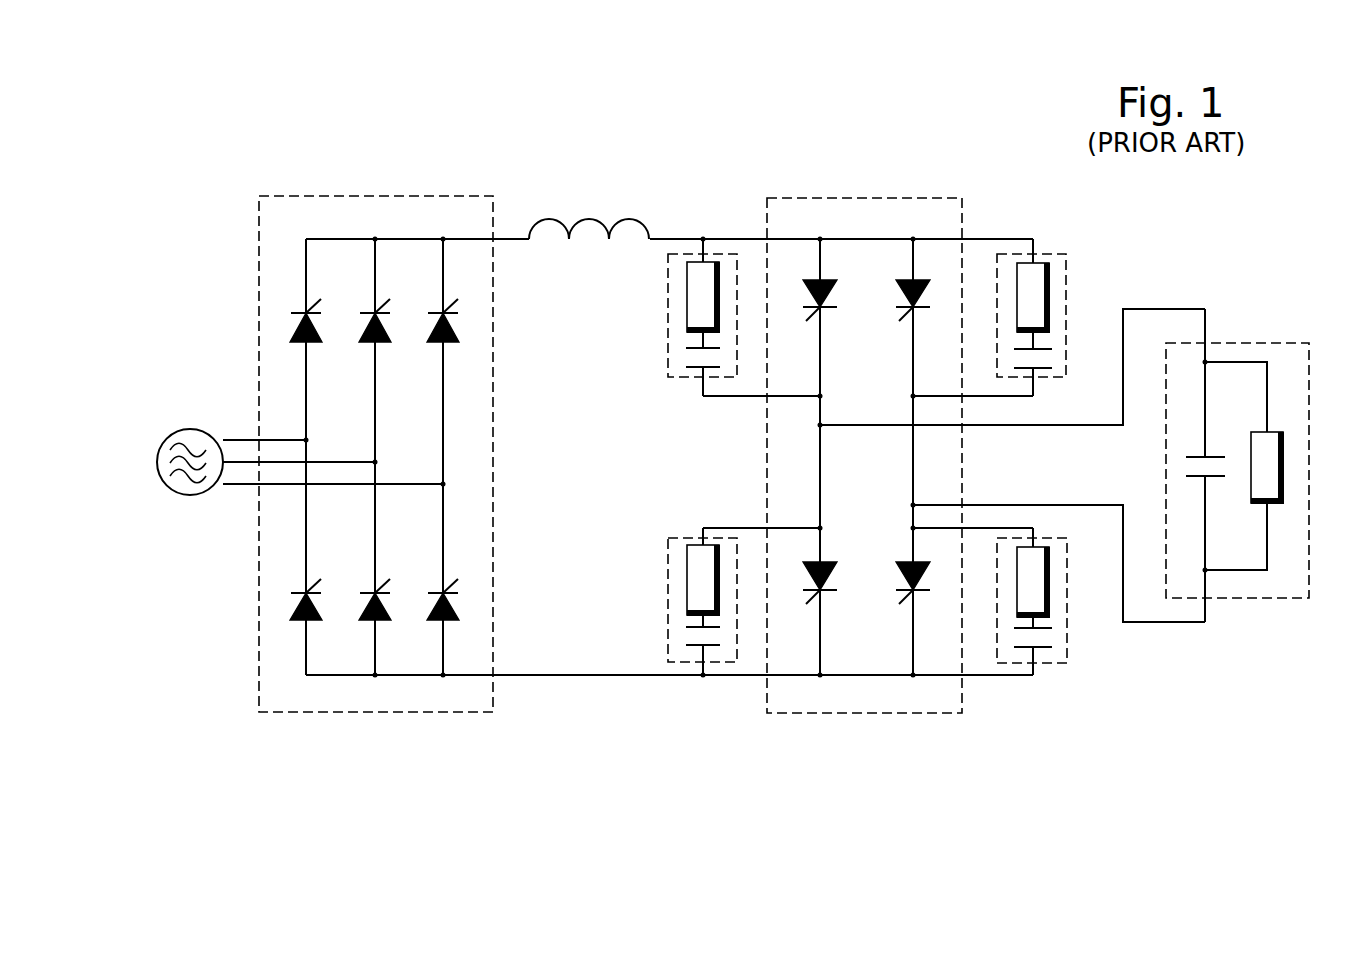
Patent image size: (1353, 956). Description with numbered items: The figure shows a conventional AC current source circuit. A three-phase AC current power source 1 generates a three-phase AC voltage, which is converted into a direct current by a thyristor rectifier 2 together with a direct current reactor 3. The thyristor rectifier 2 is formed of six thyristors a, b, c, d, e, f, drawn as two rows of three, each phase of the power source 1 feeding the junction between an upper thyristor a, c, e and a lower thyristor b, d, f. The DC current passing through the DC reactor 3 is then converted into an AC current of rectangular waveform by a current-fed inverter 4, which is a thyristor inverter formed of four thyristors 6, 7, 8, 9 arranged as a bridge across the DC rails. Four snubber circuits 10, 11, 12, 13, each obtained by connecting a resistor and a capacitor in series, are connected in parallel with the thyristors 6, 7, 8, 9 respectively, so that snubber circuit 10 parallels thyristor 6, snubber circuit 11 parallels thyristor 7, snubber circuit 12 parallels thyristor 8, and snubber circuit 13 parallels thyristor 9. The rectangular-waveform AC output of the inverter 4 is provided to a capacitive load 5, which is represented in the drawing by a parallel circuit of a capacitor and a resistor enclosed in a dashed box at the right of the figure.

The 3-phase AC current power source 1 is at (190, 429).
The thyristor rectifier 2 is at (374, 196).
The direct current (DC) reactor 3 is at (588, 219).
The current-fed inverter 4 is at (900, 198).
The capacitive load 5 is at (1265, 343).
The thyristor 6 is at (837, 293).
The thyristor 7 is at (834, 568).
The thyristor 8 is at (899, 284).
The thyristor 9 is at (899, 571).
The snubber circuit 10 is at (668, 291).
The snubber circuit 11 is at (668, 568).
The snubber circuit 12 is at (1066, 289).
The snubber circuit 13 is at (1067, 643).
The thyristor a is at (314, 343).
The thyristor b is at (314, 621).
The thyristor c is at (383, 343).
The thyristor d is at (383, 621).
The thyristor e is at (451, 343).
The thyristor f is at (451, 621).